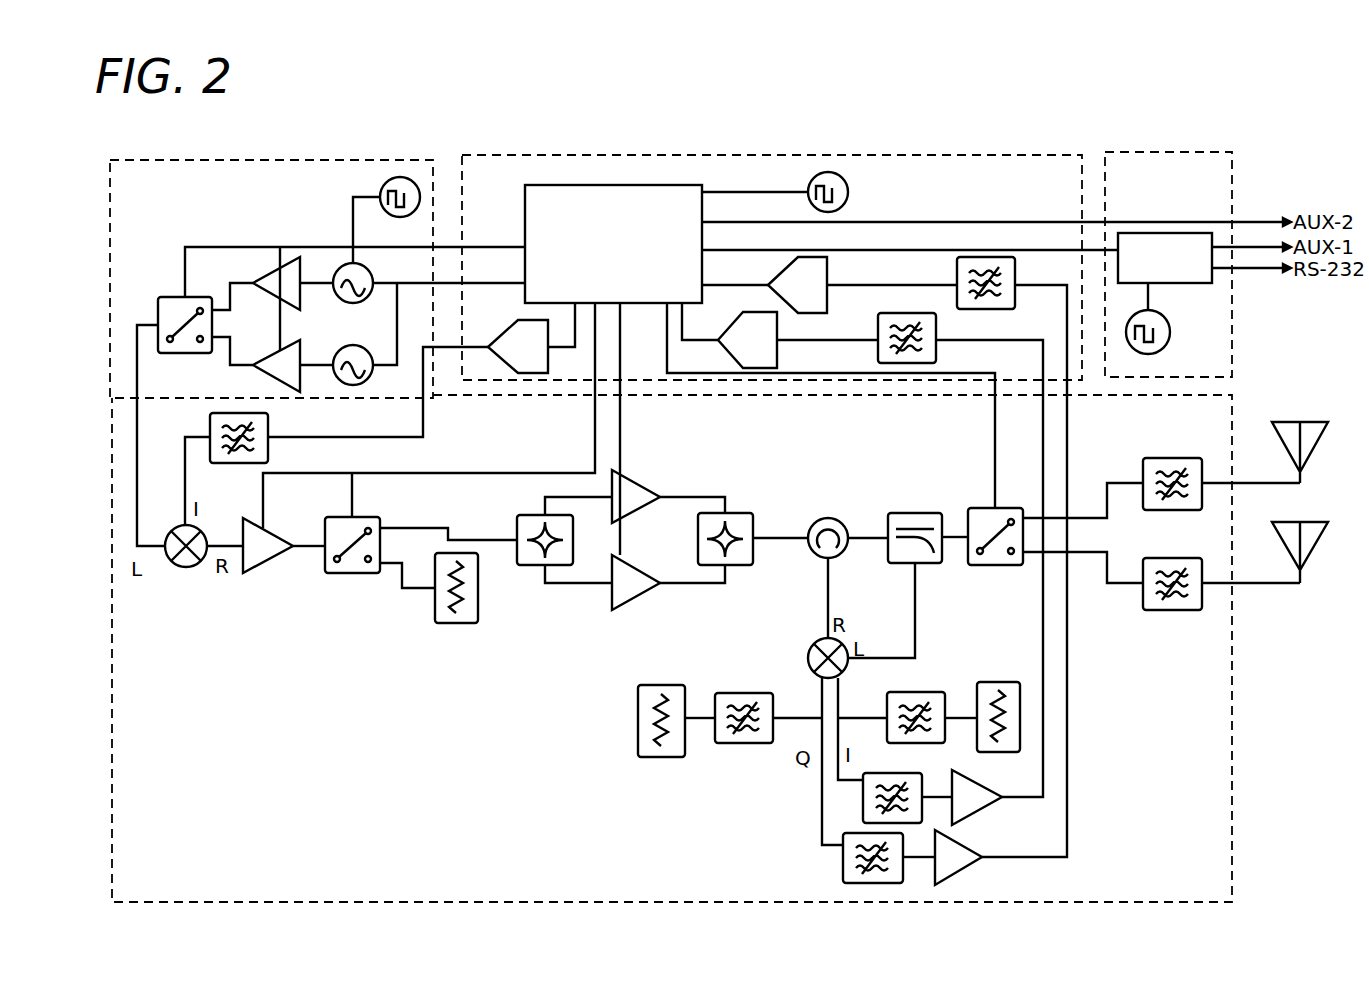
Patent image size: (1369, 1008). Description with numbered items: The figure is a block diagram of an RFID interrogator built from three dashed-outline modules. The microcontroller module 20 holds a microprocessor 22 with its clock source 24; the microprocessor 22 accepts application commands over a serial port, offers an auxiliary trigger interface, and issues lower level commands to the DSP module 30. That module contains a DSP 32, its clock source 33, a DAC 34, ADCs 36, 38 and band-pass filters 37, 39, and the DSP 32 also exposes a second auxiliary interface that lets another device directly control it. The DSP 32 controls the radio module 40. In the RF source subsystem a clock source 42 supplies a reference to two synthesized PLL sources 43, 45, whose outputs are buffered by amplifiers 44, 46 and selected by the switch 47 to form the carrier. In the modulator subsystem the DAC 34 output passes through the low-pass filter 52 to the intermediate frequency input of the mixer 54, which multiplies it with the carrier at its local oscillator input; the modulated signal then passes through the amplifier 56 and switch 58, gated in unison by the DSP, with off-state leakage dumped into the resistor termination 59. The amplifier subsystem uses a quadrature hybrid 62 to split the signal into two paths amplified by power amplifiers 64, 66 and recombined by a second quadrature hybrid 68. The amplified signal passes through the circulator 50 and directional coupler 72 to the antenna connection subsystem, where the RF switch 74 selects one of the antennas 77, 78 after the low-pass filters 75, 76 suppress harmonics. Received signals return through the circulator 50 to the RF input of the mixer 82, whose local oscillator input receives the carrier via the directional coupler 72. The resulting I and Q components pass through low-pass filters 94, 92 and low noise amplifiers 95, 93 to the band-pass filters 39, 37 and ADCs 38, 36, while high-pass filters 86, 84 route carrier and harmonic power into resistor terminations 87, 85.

The microcontroller module 20 is at (1163, 152).
The microprocessor 22 is at (1162, 233).
The clock source 24 is at (1171, 338).
The DSP module 30 is at (722, 155).
The DSP 32 is at (600, 185).
The clock source 33 is at (830, 172).
The digital-to-analog converter 34 is at (533, 373).
The analog-to-digital converter 36 is at (830, 282).
The band-pass filter 37 is at (985, 257).
The analog-to-digital converter 38 is at (755, 368).
The band-pass filter 39 is at (905, 313).
The radio module 40 is at (268, 160).
The clock source 42 is at (407, 177).
The synthesized PLL source 43 is at (374, 280).
The amplifier 44 is at (270, 275).
The synthesized PLL source 45 is at (368, 378).
The amplifier 46 is at (300, 378).
The switch 47 is at (175, 297).
The circulator 50 is at (822, 518).
The low-pass filter 52 is at (238, 413).
The mixer 54 is at (188, 568).
The amplifier 56 is at (268, 562).
The switch 58 is at (355, 573).
The resistor termination 59 is at (460, 623).
The quadrature hybrid 62 is at (530, 565).
The power amplifier 64 is at (640, 480).
The power amplifier 66 is at (640, 600).
The quadrature hybrid 68 is at (740, 513).
The directional coupler 72 is at (913, 513).
The RF switch 74 is at (985, 508).
The low-pass filter 75 is at (1170, 458).
The low-pass filter 76 is at (1175, 610).
The antenna 77 is at (1318, 445).
The antenna 78 is at (1318, 545).
The mixer 82 is at (811, 652).
The high-pass filter 84 is at (745, 743).
The resistor termination 85 is at (665, 757).
The high-pass filter 86 is at (912, 692).
The resistor termination 87 is at (1000, 682).
The low-pass filter 92 is at (843, 858).
The low noise amplifier 93 is at (975, 870).
The low-pass filter 94 is at (863, 797).
The low noise amplifier 95 is at (998, 808).